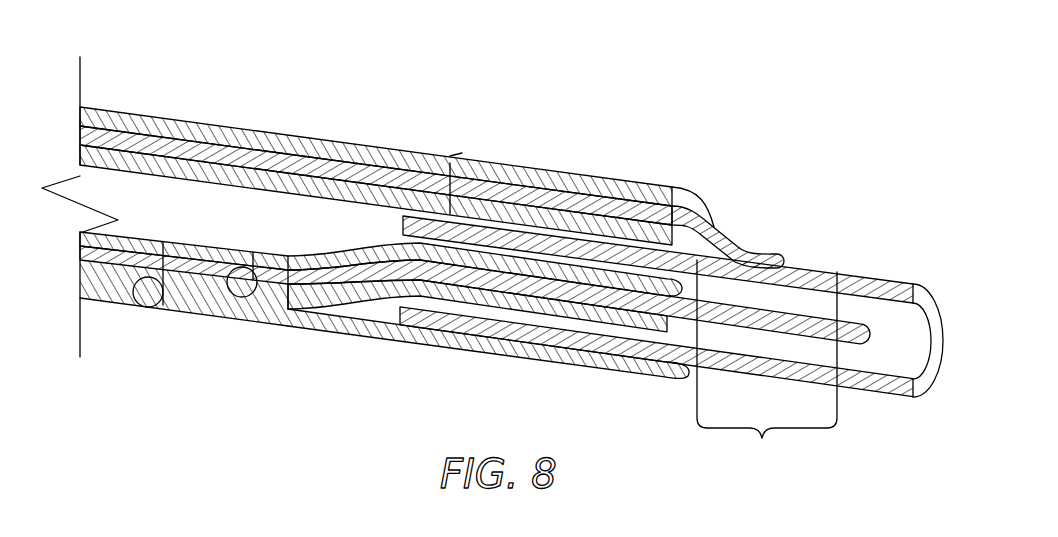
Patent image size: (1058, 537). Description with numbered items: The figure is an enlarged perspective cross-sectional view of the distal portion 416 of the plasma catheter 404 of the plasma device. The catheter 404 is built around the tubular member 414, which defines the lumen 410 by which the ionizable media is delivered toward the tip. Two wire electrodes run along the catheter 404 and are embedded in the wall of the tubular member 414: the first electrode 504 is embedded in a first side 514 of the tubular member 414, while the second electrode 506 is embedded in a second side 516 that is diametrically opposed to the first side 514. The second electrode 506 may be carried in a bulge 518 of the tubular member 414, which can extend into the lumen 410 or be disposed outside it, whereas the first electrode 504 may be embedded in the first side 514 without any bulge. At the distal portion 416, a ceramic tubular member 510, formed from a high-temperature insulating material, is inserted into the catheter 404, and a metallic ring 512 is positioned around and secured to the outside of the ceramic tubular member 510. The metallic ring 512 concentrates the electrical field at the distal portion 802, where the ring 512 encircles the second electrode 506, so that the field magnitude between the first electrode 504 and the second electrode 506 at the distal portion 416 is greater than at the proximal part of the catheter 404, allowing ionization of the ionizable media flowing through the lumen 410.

The plasma catheter 404 is at (255, 89).
The tubular member 414 is at (545, 175).
The first side 514 is at (425, 176).
The distal portion 416 is at (749, 160).
The first electrode 504 is at (780, 258).
The metallic ring 512 is at (838, 272).
The second electrode 506 is at (868, 331).
The ceramic tubular member 510 is at (898, 400).
The lumen 410 is at (897, 359).
The distal portion 802 is at (762, 440).
The second side 516 is at (141, 306).
The bulge 518 is at (234, 297).